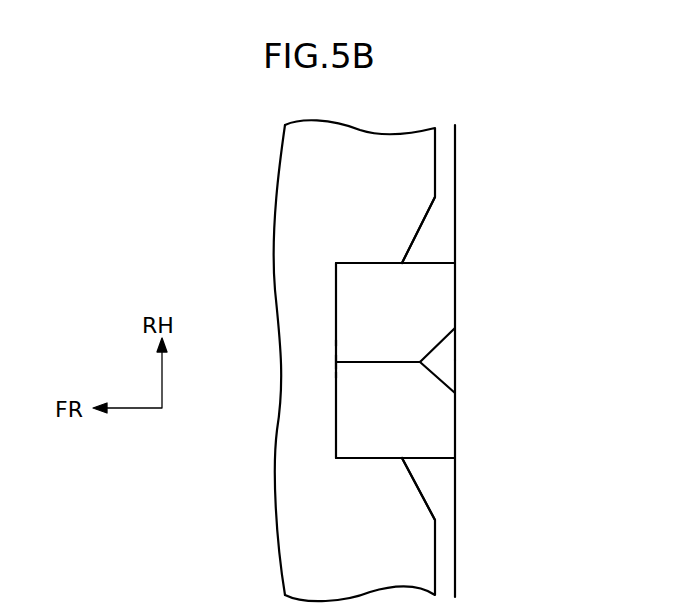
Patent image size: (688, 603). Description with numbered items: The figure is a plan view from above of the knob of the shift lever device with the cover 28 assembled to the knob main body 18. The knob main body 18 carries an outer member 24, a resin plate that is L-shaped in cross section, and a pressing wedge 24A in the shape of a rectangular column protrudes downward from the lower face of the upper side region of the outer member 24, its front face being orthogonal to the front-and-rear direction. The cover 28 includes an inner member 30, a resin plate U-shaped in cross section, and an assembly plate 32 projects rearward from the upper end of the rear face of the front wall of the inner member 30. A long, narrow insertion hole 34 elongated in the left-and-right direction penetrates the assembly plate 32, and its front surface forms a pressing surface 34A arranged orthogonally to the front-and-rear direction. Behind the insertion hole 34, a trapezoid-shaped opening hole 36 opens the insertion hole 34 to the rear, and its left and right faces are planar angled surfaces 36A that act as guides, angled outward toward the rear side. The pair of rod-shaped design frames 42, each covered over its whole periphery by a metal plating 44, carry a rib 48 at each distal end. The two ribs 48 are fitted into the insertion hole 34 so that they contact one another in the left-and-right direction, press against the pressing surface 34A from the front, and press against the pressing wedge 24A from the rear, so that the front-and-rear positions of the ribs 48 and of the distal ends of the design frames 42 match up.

The knob main body 18 is at (455, 170).
The outer member 24 is at (526, 478).
The pressing wedge 24A is at (448, 555).
The cover 28 is at (286, 357).
The inner member 30 is at (282, 183).
The assembly plate 32 is at (302, 566).
The insertion hole 34 is at (367, 263).
The pressing surface 34A is at (338, 404).
The opening hole 36 is at (420, 479).
The angled surfaces 36A is at (428, 232).
The design frames 42 is at (323, 326).
The metal plating 44 is at (426, 263).
The rib 48 is at (336, 343).